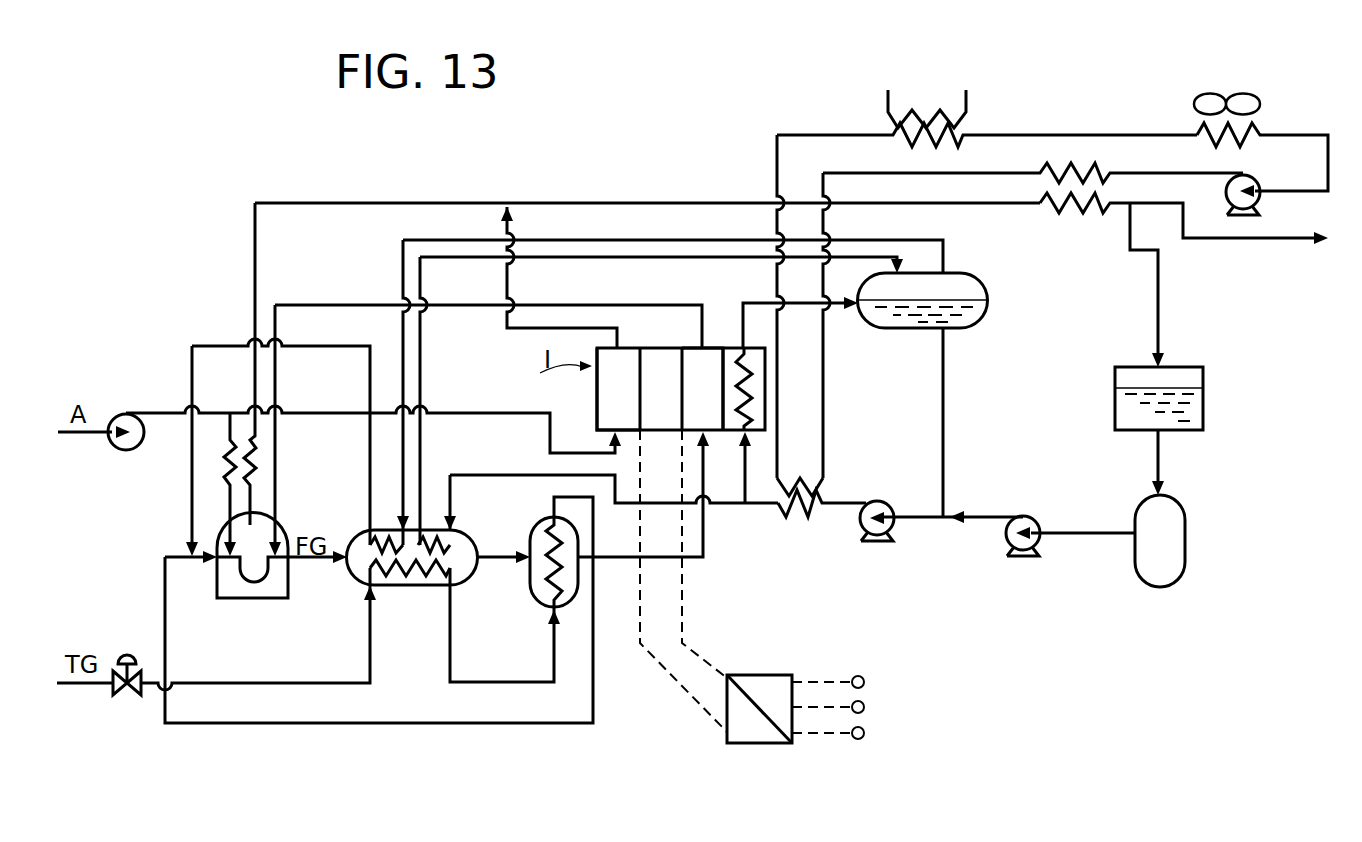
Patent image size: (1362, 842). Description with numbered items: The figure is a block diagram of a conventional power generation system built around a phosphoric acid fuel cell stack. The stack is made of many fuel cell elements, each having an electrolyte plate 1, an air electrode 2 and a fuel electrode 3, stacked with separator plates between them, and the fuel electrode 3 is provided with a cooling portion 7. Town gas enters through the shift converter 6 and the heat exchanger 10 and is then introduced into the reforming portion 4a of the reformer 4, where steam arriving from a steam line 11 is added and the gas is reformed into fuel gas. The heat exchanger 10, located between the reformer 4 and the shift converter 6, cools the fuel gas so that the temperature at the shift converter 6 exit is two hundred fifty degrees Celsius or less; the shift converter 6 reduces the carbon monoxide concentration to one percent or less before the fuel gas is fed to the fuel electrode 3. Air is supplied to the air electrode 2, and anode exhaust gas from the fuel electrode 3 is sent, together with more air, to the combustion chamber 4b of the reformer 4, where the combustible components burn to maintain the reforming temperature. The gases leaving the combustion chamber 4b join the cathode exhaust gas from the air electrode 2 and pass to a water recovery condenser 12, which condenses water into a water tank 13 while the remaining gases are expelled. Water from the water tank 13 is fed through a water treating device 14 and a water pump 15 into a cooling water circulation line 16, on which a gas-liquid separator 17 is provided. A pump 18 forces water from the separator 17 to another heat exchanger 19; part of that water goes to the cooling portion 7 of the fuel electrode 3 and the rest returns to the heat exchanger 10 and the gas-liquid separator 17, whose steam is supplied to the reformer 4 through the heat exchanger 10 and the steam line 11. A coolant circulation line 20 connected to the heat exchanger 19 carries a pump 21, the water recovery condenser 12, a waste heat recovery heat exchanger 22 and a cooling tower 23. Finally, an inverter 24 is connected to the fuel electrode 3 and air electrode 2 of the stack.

The electrolyte plate 1 is at (668, 362).
The air electrode 2 is at (615, 402).
The fuel electrode 3 is at (710, 355).
The reformer 4 is at (236, 608).
The reforming portion 4a is at (268, 585).
The combustion chamber 4b is at (252, 528).
The shift converter 6 is at (527, 593).
The cooling portion 7 is at (735, 436).
The heat exchanger 10 is at (418, 592).
The steam line 11 is at (207, 345).
The water recovery condenser 12 is at (1060, 223).
The water tank 13 is at (1188, 372).
The water treating device 14 is at (1170, 565).
The water pump 15 is at (1025, 547).
The cooling water circulation line 16 is at (945, 425).
The gas-liquid separator 17 is at (987, 313).
The pump 18 is at (878, 528).
The heat exchanger 19 is at (798, 512).
The coolant circulation line 20 is at (777, 163).
The pump 21 is at (1266, 181).
The waste heat recovery heat exchanger 22 is at (893, 128).
The cooling tower 23 is at (1197, 118).
The inverter 24 is at (772, 688).